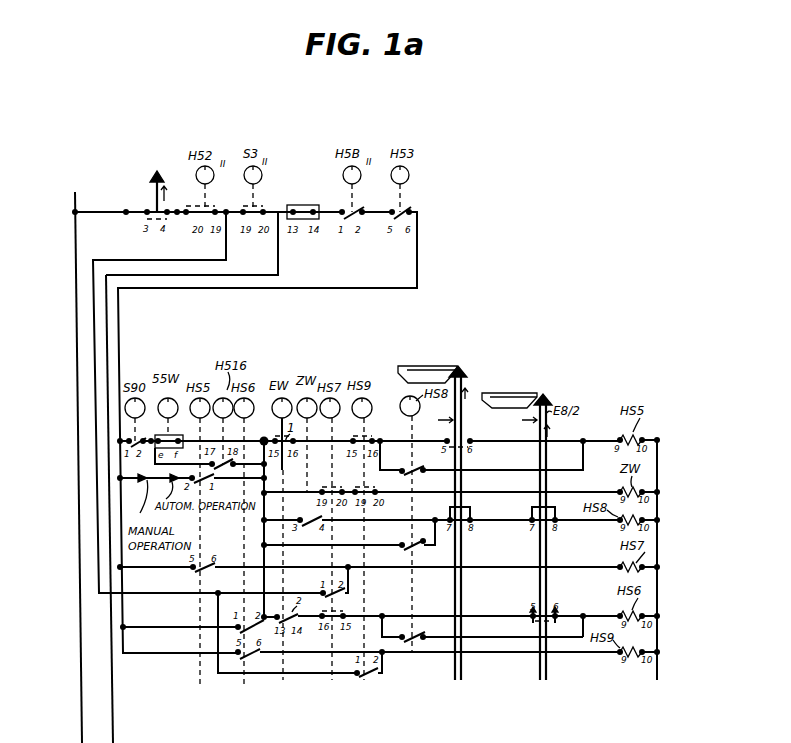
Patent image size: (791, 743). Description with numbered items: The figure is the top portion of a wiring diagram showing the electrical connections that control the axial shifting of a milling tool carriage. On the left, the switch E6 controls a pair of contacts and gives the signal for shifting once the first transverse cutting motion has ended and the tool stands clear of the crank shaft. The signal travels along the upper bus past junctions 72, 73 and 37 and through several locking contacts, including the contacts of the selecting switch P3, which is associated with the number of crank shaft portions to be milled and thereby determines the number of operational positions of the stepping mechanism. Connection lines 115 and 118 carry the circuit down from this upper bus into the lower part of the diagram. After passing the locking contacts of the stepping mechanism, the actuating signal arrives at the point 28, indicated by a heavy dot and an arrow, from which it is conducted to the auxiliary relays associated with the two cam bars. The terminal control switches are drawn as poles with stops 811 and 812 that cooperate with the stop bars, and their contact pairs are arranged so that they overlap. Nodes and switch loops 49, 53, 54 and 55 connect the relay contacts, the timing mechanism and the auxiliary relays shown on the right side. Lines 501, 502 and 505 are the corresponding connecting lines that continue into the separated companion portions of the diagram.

The line 501 is at (78, 734).
The line 502 is at (114, 734).
The line 505 is at (660, 666).
The connection line 115 is at (278, 211).
The connection line 118 is at (208, 402).
The junction 37 is at (226, 210).
The junction 72 is at (109, 224).
The junction 73 is at (170, 210).
The point 28 is at (260, 520).
The switch loop 49 is at (380, 439).
The switch 53 is at (434, 519).
The switch 54 is at (382, 615).
The junction 55 is at (583, 613).
The stop I pushbutton 811 is at (406, 370).
The stop II pushbutton 812 is at (498, 410).
The switch E6 is at (154, 191).
The selecting switch P3 is at (301, 205).